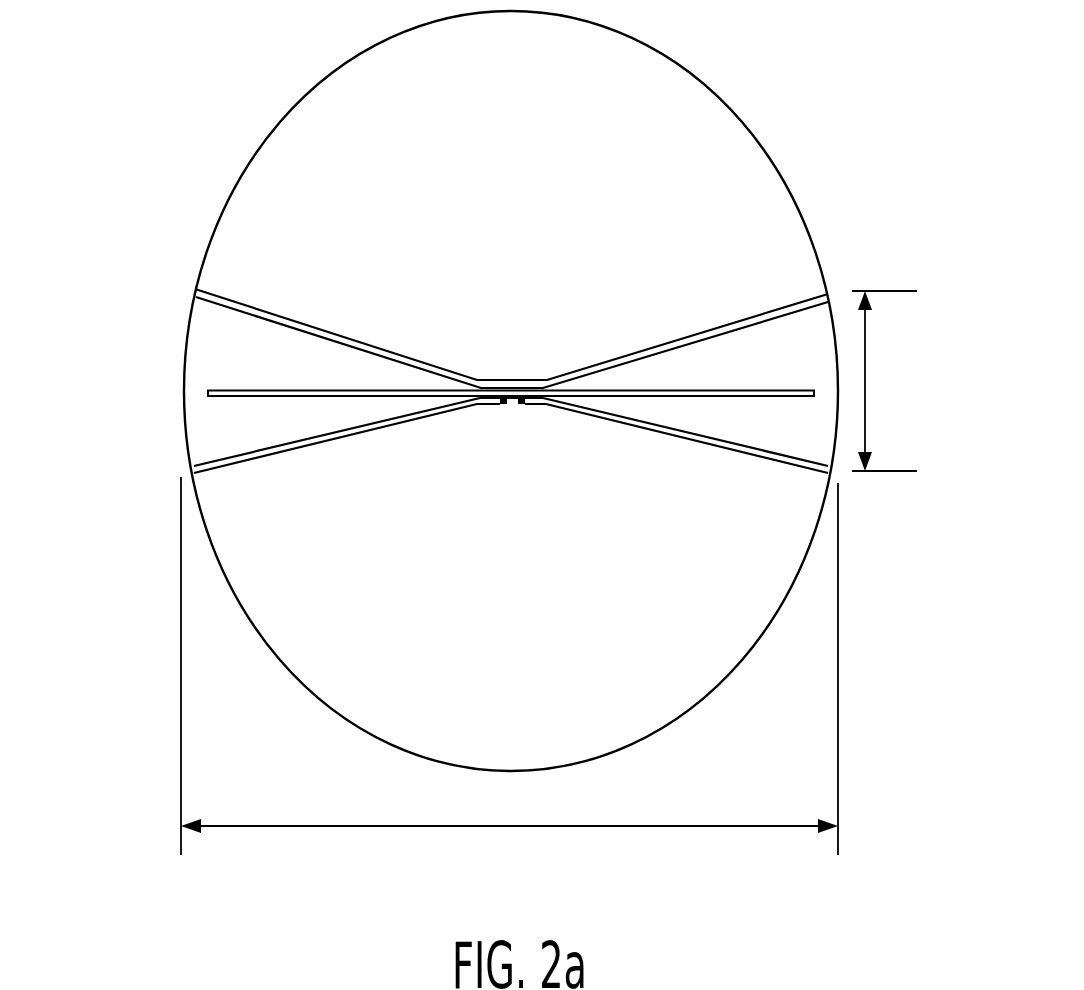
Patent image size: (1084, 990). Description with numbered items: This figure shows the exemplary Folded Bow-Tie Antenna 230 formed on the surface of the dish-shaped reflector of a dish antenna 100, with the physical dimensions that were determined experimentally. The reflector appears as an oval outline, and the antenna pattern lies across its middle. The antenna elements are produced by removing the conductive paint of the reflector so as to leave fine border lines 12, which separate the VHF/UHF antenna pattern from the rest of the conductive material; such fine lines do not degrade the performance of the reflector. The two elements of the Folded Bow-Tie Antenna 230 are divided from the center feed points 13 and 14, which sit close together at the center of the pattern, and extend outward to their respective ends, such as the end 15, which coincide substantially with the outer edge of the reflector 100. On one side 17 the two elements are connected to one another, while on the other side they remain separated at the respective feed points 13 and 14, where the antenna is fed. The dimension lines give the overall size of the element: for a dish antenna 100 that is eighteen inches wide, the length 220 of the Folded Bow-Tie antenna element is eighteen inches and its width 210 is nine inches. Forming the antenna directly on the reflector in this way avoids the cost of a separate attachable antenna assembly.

The dish antenna 100 is at (477, 407).
The Folded Bow-Tie Antenna 230 is at (220, 343).
The border lines 12 is at (529, 293).
The side 17 is at (516, 386).
The center feed point 13 is at (501, 405).
The center feed point 14 is at (523, 405).
The end 15 is at (208, 393).
The width 210 is at (896, 381).
The length 220 is at (509, 679).